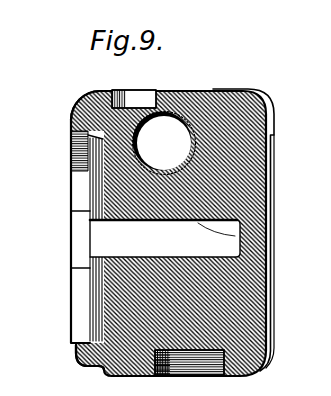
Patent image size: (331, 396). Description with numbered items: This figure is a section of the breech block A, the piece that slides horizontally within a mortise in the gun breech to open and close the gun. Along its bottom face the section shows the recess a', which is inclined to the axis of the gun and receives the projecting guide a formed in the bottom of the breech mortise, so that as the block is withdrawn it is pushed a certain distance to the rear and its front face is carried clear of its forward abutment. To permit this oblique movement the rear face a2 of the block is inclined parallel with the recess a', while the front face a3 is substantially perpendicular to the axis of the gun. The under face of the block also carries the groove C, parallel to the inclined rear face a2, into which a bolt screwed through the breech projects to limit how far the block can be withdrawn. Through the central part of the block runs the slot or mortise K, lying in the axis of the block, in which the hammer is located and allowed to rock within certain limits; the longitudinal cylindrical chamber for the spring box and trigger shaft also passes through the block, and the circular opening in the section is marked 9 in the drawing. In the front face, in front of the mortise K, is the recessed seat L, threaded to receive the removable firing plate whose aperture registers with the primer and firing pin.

The breech block A is at (240, 302).
The projecting guide a is at (142, 88).
The recess a' is at (90, 370).
The rear face a2 is at (265, 270).
The front face a3 is at (68, 110).
The recessed seat L is at (73, 302).
The slot or mortise K is at (165, 238).
The groove C is at (208, 360).
The circular opening 9 is at (164, 143).